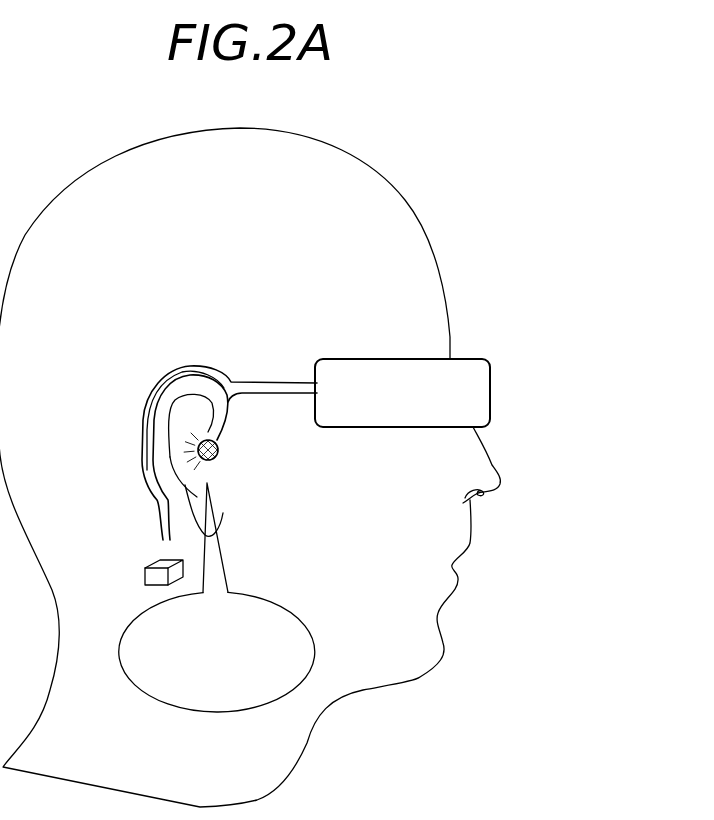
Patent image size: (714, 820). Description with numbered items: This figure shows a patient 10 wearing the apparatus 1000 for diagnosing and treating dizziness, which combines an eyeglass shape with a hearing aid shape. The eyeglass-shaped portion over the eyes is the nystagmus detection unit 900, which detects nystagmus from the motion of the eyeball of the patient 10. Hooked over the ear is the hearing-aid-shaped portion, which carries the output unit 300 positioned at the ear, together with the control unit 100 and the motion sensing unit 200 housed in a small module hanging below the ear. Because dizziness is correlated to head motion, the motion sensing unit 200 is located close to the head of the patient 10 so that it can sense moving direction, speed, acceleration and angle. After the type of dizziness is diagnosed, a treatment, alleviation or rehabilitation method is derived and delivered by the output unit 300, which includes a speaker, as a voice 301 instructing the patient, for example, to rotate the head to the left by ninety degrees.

The patient 10 is at (397, 195).
The apparatus for diagnosing and treating dizziness 1000 is at (314, 418).
The nystagmus detection unit 900 is at (477, 388).
The output unit 300 is at (220, 453).
The control unit 100 is at (118, 545).
The motion sensing unit 200 is at (150, 562).
The voice 301 is at (312, 630).